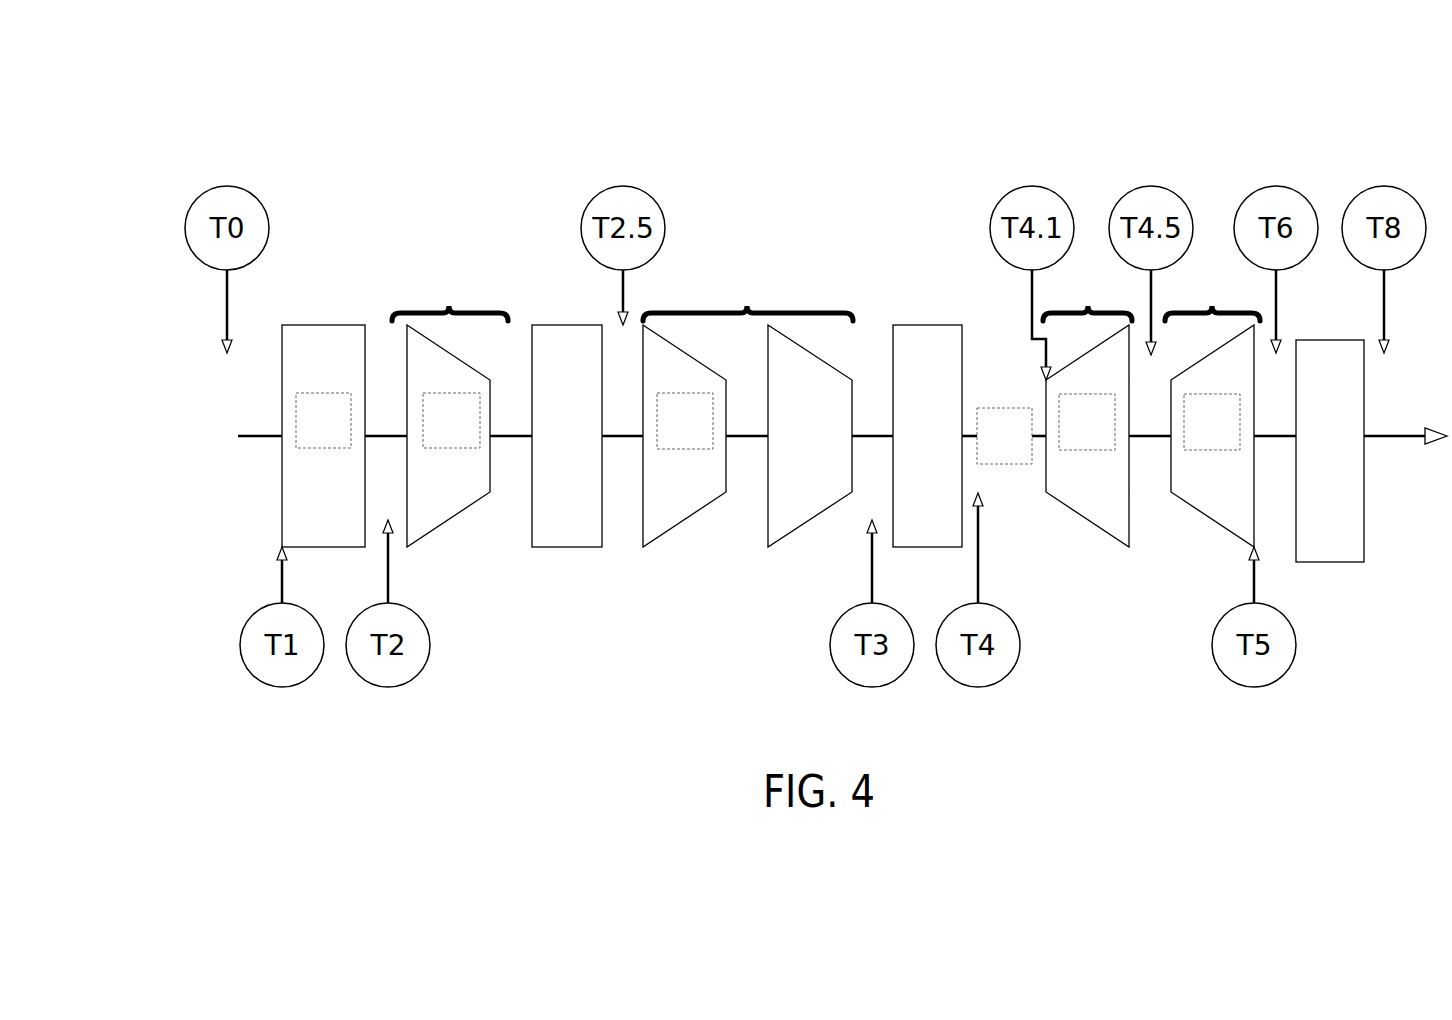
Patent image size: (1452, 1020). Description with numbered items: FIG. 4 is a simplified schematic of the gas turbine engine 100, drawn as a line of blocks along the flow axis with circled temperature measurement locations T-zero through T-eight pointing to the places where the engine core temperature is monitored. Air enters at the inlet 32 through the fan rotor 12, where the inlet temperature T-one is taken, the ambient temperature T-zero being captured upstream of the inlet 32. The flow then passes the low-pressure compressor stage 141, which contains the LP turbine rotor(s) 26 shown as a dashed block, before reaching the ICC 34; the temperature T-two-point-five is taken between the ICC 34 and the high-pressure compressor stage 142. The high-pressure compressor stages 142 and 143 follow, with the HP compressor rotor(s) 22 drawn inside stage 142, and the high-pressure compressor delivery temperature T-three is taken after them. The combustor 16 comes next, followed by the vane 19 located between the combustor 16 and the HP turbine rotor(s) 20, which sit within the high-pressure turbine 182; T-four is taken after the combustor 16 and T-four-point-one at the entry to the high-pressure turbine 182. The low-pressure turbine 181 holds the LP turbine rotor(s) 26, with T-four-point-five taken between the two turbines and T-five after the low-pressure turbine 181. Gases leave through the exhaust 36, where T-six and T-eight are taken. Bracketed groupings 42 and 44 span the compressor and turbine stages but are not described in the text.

The gas turbine engine 100 is at (230, 130).
The fan rotor 12 is at (306, 438).
The inlet 32 is at (305, 527).
The LP turbine rotor(s) 26 is at (434, 438).
The low-pressure compressor stage 141 is at (463, 495).
The high-pressure compressor stage 142 is at (698, 495).
The high-pressure compressor stage 143 is at (823, 495).
The ICC 34 is at (549, 453).
The HP compressor rotor(s) 22 is at (667, 439).
The combustor 16 is at (910, 453).
The vane 19 is at (986, 456).
The HP turbine rotor(s) 20 is at (1069, 439).
The high-pressure turbine 182 is at (1126, 495).
The low-pressure turbine 181 is at (1250, 495).
The exhaust 36 is at (1312, 469).
The heat exchange group 42 is at (826, 295).
The cooling group 44 is at (887, 295).